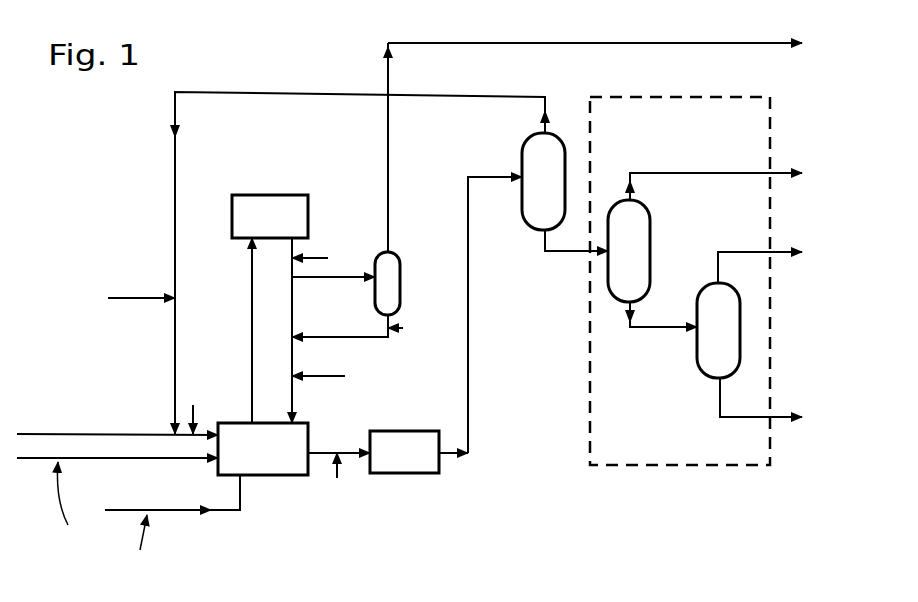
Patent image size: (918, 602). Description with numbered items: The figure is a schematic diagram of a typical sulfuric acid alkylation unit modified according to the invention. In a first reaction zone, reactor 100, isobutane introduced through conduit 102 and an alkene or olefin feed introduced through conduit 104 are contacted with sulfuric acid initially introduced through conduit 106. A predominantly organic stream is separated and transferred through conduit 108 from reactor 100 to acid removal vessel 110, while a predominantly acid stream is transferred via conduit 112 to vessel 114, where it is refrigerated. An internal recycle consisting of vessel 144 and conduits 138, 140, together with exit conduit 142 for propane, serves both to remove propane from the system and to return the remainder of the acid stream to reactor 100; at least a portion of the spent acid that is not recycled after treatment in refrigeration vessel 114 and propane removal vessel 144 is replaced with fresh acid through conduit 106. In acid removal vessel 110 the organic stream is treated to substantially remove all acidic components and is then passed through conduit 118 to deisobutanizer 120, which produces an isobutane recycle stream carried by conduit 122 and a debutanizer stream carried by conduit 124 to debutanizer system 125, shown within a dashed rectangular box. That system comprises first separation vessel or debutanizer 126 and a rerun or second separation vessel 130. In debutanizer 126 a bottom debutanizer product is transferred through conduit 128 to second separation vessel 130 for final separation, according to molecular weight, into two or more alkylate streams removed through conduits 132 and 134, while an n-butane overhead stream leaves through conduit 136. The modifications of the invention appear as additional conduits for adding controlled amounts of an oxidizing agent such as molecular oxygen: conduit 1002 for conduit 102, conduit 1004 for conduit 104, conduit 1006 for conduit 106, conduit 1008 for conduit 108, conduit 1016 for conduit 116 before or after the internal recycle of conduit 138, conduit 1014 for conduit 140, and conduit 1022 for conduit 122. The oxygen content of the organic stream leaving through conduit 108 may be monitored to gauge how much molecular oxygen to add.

The reactor 100 is at (297, 470).
The conduit 102 is at (80, 433).
The conduit 104 is at (143, 460).
The conduit 106 is at (238, 513).
The conduit 108 is at (335, 452).
The acid removal vessel 110 is at (432, 466).
The conduit 112 is at (250, 272).
The vessel 114 is at (258, 195).
The conduit 116 is at (292, 301).
The conduit 118 is at (470, 388).
The deisobutanizer 120 is at (547, 160).
The conduit 122 is at (453, 97).
The conduit 124 is at (555, 255).
The debutanizer system 125 is at (770, 97).
The debutanizer 126 is at (618, 220).
The conduit 128 is at (663, 327).
The second separation vessel 130 is at (722, 325).
The conduit 132 is at (783, 250).
The conduit 134 is at (783, 420).
The conduit 136 is at (780, 170).
The conduit 138 is at (334, 272).
The conduit 140 is at (375, 340).
The exit conduit 142 is at (390, 133).
The propane removal vessel 144 is at (395, 250).
The conduit 1002 is at (193, 405).
The conduit 1004 is at (68, 509).
The conduit 1006 is at (141, 550).
The conduit 1008 is at (337, 478).
The conduit 1014 is at (403, 328).
The conduit 1016 is at (292, 272).
The conduit 1022 is at (125, 297).